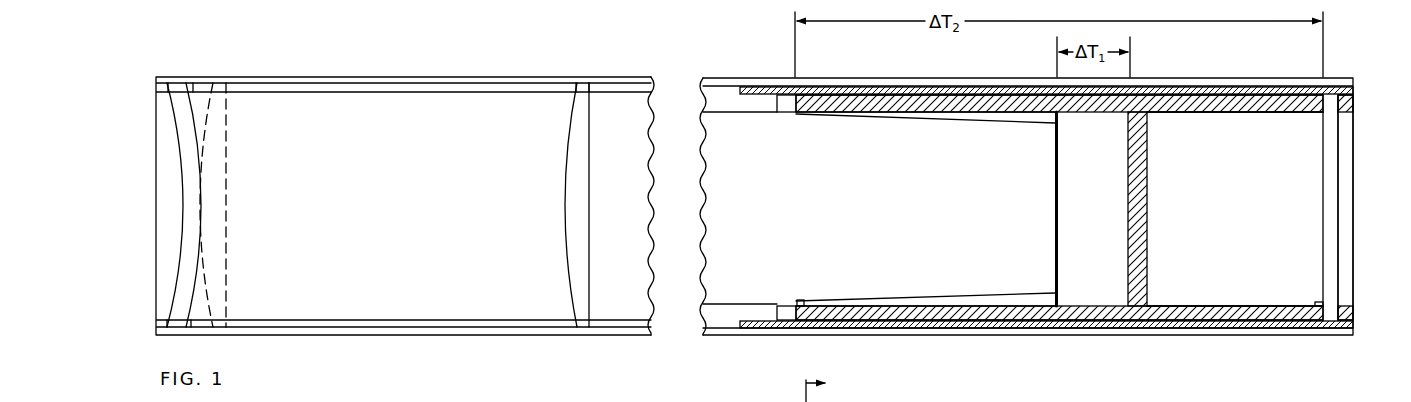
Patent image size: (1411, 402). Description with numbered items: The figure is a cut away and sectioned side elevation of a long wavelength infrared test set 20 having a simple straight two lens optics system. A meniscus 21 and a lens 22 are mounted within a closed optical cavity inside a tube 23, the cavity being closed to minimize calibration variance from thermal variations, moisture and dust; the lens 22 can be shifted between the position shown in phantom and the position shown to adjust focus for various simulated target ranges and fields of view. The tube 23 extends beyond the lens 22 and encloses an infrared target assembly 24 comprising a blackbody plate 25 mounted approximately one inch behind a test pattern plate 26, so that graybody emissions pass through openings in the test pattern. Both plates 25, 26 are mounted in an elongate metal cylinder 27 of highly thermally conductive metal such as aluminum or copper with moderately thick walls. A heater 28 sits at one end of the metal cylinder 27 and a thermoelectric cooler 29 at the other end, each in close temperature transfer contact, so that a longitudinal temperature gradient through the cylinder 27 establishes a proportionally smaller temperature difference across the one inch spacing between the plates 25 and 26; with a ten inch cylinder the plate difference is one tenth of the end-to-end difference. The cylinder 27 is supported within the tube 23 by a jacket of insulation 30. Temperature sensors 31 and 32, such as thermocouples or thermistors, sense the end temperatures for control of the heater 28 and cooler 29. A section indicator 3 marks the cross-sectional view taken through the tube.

The long wavelength infrared test set 20 is at (1278, 345).
The meniscus 21 is at (184, 212).
The lens 22 is at (232, 203).
The tube 23 is at (660, 80).
The infrared target assembly 24 is at (850, 125).
The blackbody plate 25 is at (1128, 200).
The test pattern plate 26 is at (1056, 197).
The metal cylinder 27 is at (1222, 112).
The heater 28 is at (1354, 240).
The thermoelectric cooler 29 is at (776, 110).
The jacket of insulation 30 is at (1350, 91).
The sensor 31 is at (800, 300).
The sensor 32 is at (1316, 304).
The section line 3 is at (813, 381).